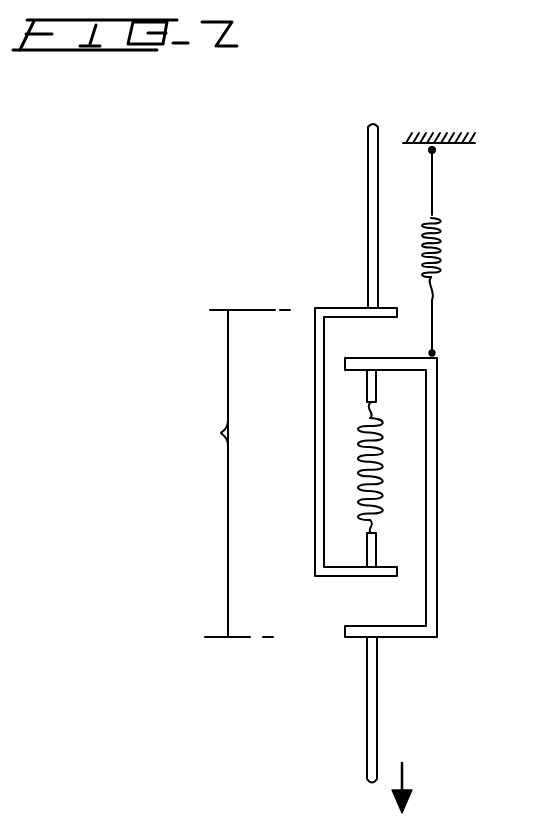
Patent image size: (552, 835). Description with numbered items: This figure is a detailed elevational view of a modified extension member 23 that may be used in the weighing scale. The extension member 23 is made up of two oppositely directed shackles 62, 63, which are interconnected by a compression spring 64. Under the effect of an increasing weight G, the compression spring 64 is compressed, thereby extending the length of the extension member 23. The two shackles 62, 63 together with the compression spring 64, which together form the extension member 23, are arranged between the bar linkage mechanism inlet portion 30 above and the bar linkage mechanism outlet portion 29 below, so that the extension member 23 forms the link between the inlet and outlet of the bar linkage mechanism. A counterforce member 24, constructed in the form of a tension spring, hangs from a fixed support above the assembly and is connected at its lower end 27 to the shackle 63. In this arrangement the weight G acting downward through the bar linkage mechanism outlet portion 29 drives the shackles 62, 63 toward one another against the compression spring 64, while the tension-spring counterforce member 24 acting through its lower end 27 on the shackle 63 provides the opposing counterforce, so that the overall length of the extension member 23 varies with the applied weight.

The extension member 23 is at (238, 473).
The counterforce member 24 is at (441, 252).
The lower end of the counterforce member 27 is at (434, 318).
The bar linkage mechanism outlet portion 29 is at (378, 728).
The bar linkage mechanism inlet portion 30 is at (368, 228).
The shackle 62 is at (315, 418).
The shackle 63 is at (437, 480).
The compression spring 64 is at (384, 482).
The weight G is at (405, 773).